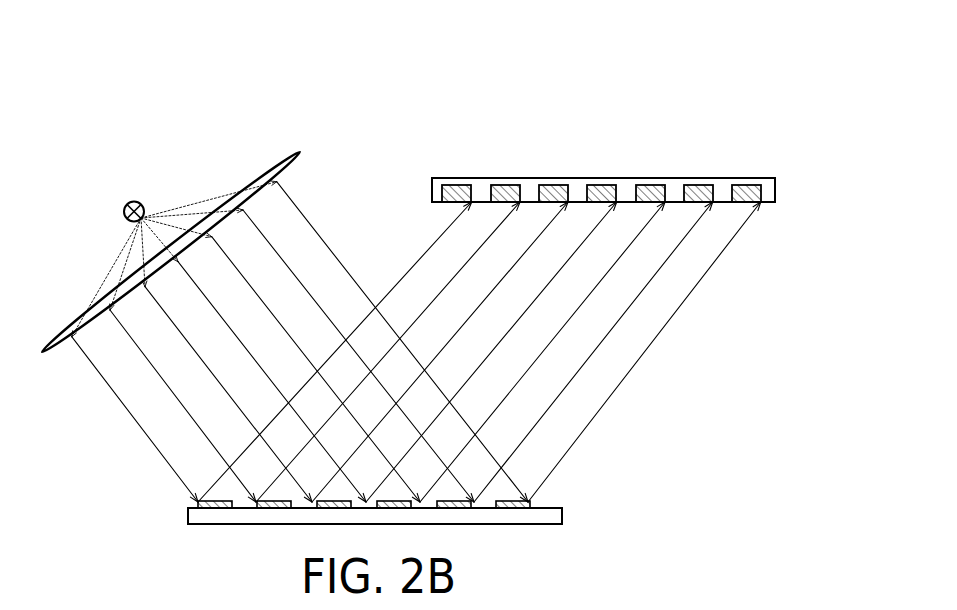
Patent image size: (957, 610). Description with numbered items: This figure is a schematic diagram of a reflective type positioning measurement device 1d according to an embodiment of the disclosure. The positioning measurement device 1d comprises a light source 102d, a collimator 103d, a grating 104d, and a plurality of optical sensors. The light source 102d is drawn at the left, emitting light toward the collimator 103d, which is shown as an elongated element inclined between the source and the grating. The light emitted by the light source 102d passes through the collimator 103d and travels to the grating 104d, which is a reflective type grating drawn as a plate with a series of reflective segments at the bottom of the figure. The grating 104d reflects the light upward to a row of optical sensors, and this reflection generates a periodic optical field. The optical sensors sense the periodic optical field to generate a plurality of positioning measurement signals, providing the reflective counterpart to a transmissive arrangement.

The reflective type positioning measurement device 1d is at (777, 62).
The light source 102d is at (141, 200).
The collimator 103d is at (303, 153).
The grating 104d is at (563, 513).